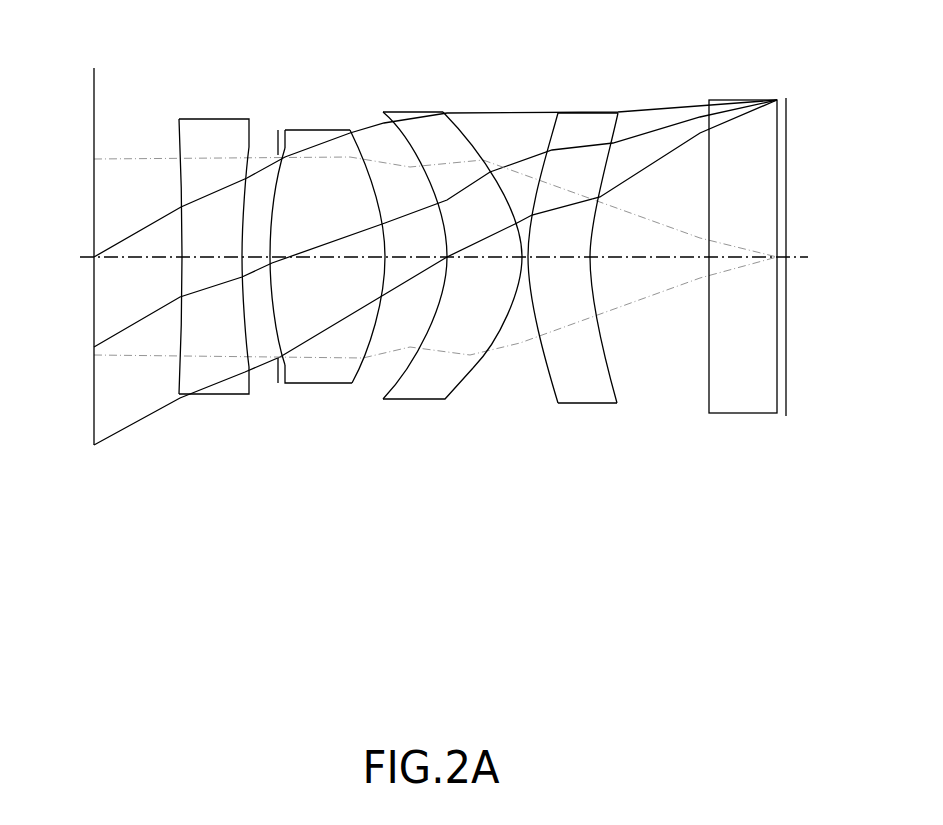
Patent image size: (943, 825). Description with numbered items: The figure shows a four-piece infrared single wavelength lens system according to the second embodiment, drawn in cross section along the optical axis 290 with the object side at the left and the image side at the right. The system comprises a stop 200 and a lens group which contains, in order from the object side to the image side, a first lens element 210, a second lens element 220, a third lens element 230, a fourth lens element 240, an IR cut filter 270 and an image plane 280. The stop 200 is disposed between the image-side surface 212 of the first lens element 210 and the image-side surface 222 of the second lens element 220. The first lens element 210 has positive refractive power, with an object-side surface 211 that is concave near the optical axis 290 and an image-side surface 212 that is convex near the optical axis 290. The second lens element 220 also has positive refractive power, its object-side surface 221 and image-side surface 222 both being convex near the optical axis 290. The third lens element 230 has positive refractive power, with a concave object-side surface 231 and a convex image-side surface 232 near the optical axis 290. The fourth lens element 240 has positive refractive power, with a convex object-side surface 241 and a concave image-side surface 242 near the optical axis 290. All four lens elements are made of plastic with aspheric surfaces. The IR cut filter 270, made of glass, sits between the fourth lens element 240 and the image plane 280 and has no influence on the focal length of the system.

The stop 200 is at (276, 129).
The first lens element 210 is at (200, 267).
The object-side surface of the first lens element 211 is at (176, 375).
The image-side surface of the first lens element 212 is at (247, 360).
The second lens element 220 is at (316, 273).
The object-side surface of the second lens element 221 is at (279, 350).
The image-side surface of the second lens element 222 is at (372, 348).
The third lens element 230 is at (437, 266).
The object-side surface of the third lens element 231 is at (395, 363).
The image-side surface of the third lens element 232 is at (472, 368).
The fourth lens element 240 is at (584, 264).
The object-side surface of the fourth lens element 241 is at (548, 357).
The image-side surface of the fourth lens element 242 is at (611, 368).
The IR cut filter 270 is at (731, 97).
The image plane 280 is at (786, 358).
The optical axis 290 is at (93, 255).